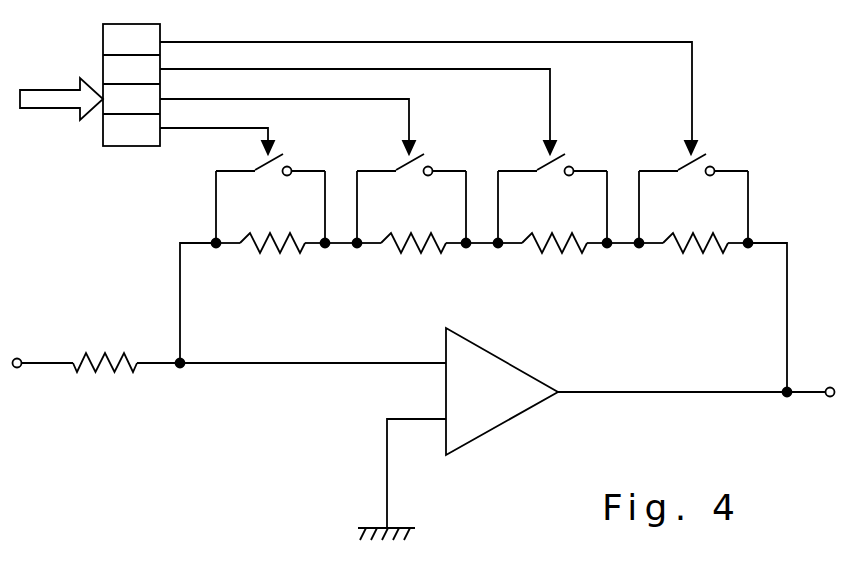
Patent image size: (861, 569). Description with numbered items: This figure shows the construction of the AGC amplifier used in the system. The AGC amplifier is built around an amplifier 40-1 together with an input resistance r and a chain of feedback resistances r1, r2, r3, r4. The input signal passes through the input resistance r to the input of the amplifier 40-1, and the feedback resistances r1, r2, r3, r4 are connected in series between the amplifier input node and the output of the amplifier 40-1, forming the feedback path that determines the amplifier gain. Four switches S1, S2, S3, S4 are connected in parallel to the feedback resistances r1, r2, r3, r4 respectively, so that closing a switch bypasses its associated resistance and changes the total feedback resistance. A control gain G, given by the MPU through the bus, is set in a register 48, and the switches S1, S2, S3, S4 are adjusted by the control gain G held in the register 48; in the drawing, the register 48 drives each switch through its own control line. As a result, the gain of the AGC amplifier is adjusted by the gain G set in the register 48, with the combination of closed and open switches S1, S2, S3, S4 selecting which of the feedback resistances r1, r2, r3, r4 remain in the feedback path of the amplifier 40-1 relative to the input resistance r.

The register 48 is at (122, 146).
The amplifier 40-1 is at (518, 418).
The switch S1 is at (270, 192).
The switch S2 is at (411, 192).
The switch S3 is at (552, 192).
The switch S4 is at (693, 192).
The feedback resistance r1 is at (271, 262).
The feedback resistance r2 is at (412, 262).
The feedback resistance r3 is at (553, 262).
The feedback resistance r4 is at (694, 262).
The input resistance r is at (105, 378).